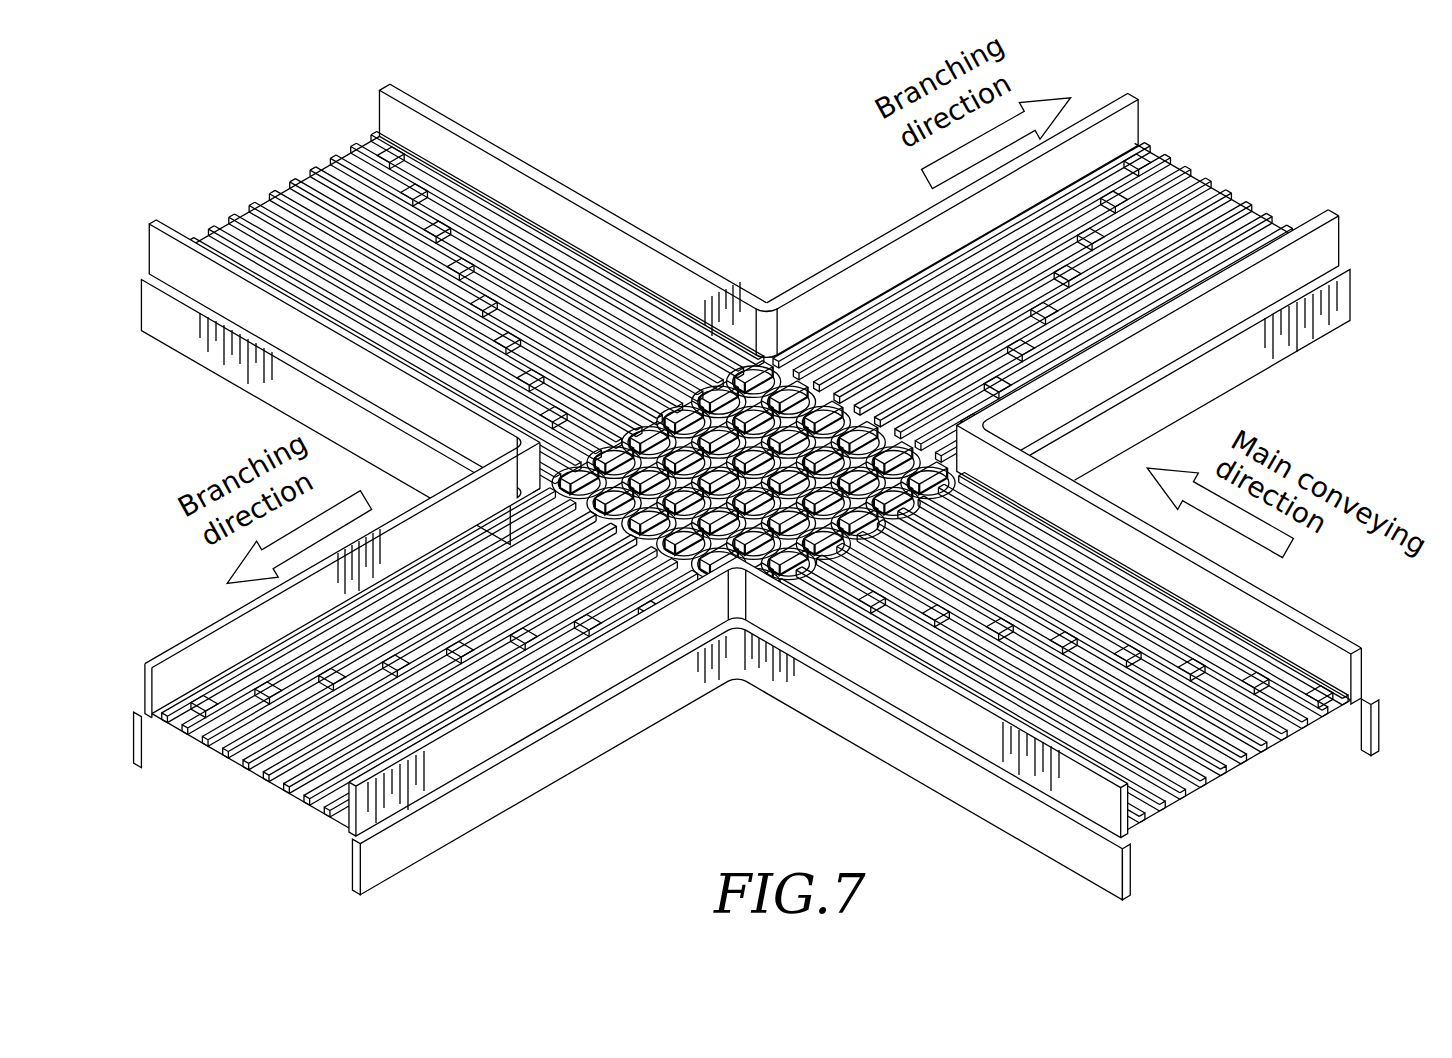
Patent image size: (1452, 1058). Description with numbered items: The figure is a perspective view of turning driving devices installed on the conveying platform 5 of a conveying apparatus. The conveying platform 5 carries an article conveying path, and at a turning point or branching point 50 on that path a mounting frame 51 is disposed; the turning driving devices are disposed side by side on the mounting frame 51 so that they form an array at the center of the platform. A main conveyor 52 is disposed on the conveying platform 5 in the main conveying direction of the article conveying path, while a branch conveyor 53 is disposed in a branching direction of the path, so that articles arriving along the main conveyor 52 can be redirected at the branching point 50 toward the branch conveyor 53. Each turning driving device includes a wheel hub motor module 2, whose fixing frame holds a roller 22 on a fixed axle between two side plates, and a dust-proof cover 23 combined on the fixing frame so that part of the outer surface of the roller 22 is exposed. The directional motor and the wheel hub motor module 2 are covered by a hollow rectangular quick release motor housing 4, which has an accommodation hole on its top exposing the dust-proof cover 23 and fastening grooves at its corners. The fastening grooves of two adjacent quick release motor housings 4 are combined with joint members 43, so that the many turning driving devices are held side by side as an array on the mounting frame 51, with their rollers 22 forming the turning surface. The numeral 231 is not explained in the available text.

The wheel hub motor module 2 is at (777, 226).
The roller 22 is at (765, 352).
The dust-proof cover 23 is at (855, 201).
The rail corner 231 is at (779, 352).
The quick release motor housing 4 is at (755, 371).
The joint member 43 is at (690, 396).
The conveying platform 5 is at (394, 614).
The branching point 50 is at (975, 440).
The mounting frame 51 is at (960, 458).
The main conveyor 52 is at (437, 165).
The branch conveyor 53 is at (247, 636).